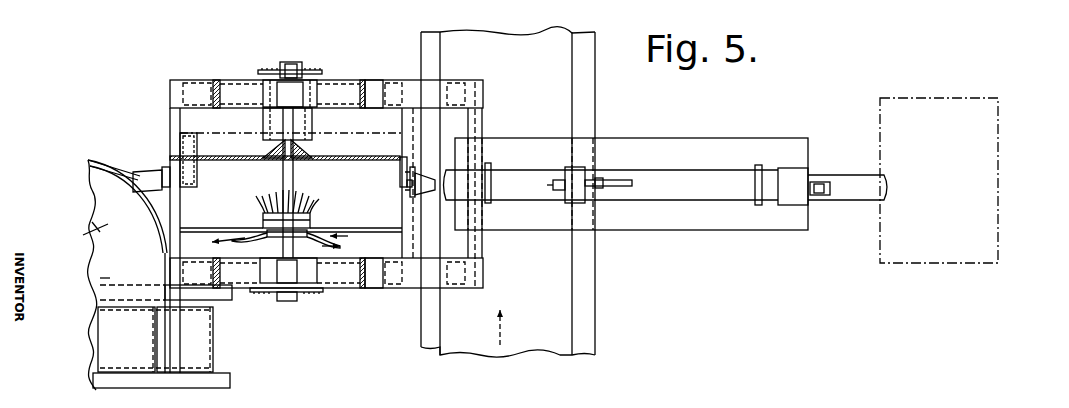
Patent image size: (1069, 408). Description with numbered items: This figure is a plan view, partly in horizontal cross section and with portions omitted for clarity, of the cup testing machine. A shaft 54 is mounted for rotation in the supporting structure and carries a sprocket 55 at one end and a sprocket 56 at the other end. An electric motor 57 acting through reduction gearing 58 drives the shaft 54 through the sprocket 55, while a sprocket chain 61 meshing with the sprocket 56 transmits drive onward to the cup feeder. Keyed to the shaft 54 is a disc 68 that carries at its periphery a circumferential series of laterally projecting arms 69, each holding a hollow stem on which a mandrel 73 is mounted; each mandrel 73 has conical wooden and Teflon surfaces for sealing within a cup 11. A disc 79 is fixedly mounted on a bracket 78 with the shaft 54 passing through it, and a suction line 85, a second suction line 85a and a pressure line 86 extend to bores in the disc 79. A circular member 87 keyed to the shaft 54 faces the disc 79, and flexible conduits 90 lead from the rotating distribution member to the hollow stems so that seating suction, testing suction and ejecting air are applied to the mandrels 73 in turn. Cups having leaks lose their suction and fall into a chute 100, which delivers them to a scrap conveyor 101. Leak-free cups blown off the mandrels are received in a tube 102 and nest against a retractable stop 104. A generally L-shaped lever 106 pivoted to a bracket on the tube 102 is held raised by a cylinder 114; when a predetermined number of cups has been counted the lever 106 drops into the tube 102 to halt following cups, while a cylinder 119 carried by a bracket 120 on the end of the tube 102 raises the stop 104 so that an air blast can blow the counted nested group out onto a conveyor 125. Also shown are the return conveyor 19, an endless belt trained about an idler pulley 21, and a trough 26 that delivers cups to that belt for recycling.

The cup 11 is at (143, 178).
The return conveyor 19 is at (113, 342).
The idler pulley 21 is at (190, 343).
The trough 26 is at (113, 275).
The shaft 54 is at (300, 208).
The sprocket 55 is at (310, 72).
The sprocket 56 is at (310, 301).
The electric motor 57 is at (310, 125).
The reduction gearing 58 is at (268, 88).
The sprocket chain 61 is at (320, 290).
The disc 68 is at (236, 152).
The arm 69 is at (163, 168).
The mandrel 73 is at (427, 190).
The bracket 78 is at (262, 246).
The disc 79 is at (263, 218).
The suction line 85 is at (236, 240).
The suction line 85a is at (300, 243).
The pressure line 86 is at (338, 230).
The circular member 87 is at (266, 214).
The flexible conduit 90 is at (266, 205).
The chute 100 is at (167, 133).
The scrap conveyor 101 is at (545, 302).
The tube 102 is at (680, 190).
The retractable stop 104 is at (808, 202).
The lever 106 is at (618, 185).
The cylinder 114 is at (567, 178).
The cylinder 119 is at (822, 182).
The bracket 120 is at (796, 193).
The conveyor 125 is at (925, 106).